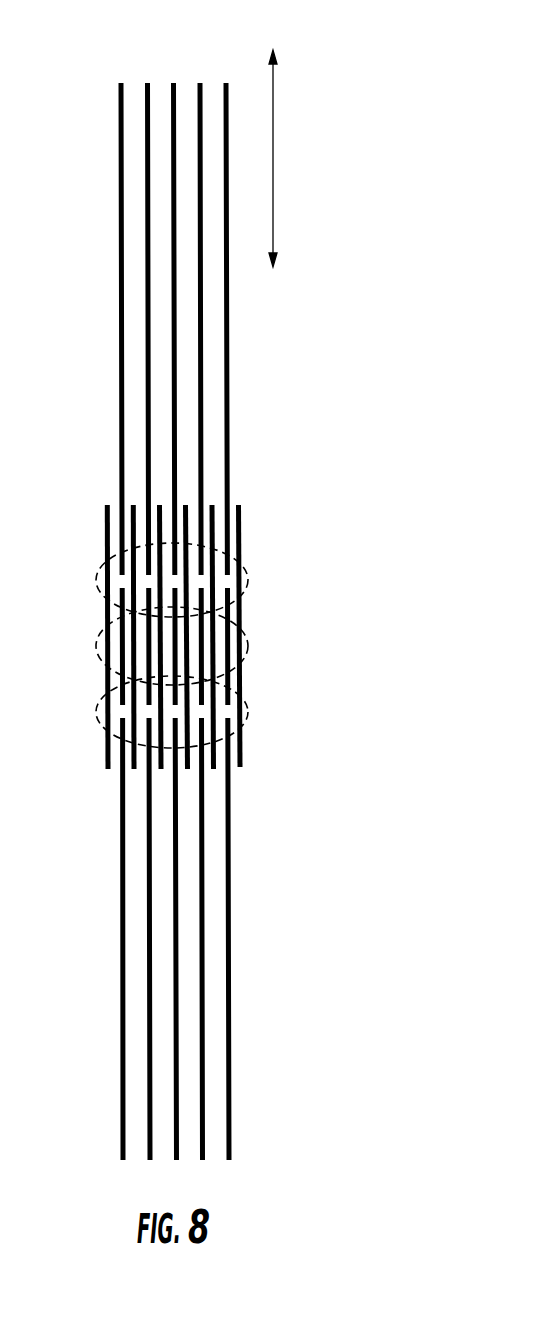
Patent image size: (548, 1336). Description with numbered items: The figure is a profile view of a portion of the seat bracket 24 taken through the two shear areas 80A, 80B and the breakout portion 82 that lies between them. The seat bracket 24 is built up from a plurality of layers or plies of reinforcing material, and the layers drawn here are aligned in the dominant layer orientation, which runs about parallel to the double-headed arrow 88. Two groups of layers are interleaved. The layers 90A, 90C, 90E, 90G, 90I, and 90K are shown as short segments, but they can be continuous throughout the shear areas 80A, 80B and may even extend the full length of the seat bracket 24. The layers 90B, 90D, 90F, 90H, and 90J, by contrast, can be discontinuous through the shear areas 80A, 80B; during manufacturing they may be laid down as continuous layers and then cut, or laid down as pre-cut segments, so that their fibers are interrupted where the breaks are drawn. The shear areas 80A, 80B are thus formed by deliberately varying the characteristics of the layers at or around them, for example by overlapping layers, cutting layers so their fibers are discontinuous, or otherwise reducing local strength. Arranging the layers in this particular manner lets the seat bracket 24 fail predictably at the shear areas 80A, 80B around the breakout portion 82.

The seat bracket 24 is at (395, 59).
The arrow 88 is at (273, 183).
The shear area 80A is at (248, 582).
The shear area 80B is at (248, 712).
The breakout portion 82 is at (248, 647).
The layer 90A is at (107, 505).
The layer 90B is at (122, 1010).
The layer 90C is at (133, 505).
The layer 90D is at (149, 1065).
The layer 90E is at (160, 505).
The layer 90F is at (176, 1103).
The layer 90G is at (186, 505).
The layer 90H is at (205, 1037).
The layer 90I is at (212, 505).
The layer 90J is at (231, 1088).
The layer 90K is at (238, 505).